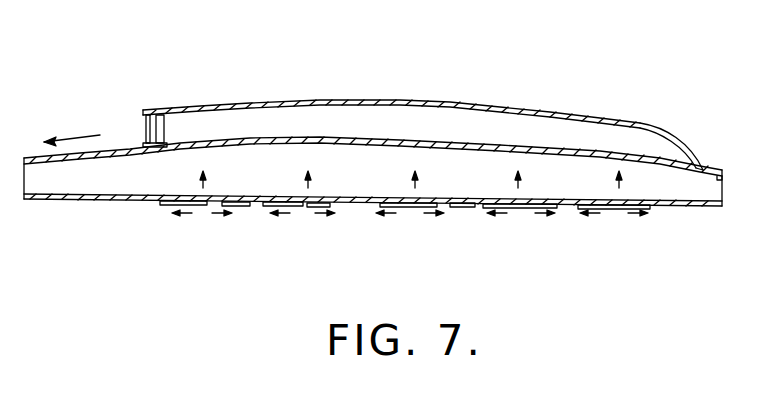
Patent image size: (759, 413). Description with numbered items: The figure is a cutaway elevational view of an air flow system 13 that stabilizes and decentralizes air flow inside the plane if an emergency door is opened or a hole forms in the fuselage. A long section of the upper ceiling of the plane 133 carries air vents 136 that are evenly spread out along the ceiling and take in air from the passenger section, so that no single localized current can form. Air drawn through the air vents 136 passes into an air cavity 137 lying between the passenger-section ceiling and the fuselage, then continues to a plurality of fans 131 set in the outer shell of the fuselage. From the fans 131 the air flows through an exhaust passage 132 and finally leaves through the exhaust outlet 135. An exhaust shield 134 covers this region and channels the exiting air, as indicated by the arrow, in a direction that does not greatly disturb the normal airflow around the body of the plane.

The air flow system 13 is at (393, 98).
The fans 131 is at (620, 157).
The exhaust passage 132 is at (507, 136).
The upper ceiling of the plane 133 is at (565, 208).
The exhaust shield 134 is at (573, 112).
The exhaust outlet 135 is at (147, 130).
The air vents 136 is at (624, 212).
The air cavity 137 is at (132, 181).